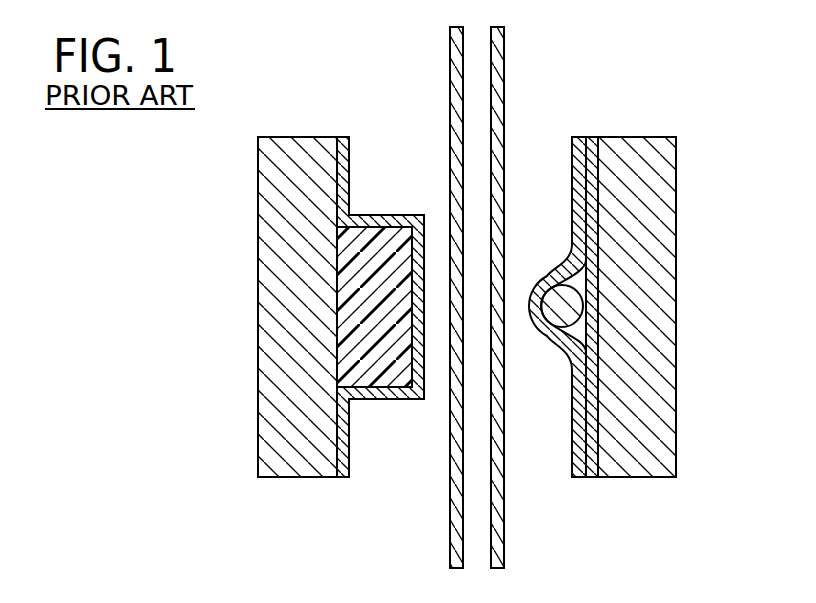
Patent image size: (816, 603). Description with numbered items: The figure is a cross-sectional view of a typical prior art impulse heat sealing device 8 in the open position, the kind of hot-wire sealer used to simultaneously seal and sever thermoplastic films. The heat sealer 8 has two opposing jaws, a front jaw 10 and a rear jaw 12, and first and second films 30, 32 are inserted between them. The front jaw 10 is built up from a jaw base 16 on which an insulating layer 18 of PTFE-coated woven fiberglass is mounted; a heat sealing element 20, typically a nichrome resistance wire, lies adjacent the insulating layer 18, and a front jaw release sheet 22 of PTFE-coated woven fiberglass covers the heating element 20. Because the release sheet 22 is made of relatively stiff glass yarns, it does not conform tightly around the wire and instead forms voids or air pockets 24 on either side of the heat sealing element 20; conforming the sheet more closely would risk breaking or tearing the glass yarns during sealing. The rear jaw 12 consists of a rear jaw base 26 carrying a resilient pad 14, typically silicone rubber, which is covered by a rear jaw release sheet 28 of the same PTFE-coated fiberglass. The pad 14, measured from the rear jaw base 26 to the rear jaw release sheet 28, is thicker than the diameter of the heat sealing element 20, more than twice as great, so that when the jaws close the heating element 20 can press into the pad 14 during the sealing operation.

The impulse heat sealing device 8 is at (631, 282).
The front jaw 10 is at (631, 290).
The rear jaw 12 is at (304, 288).
The resilient pad 14 is at (373, 258).
The jaw base 16 is at (650, 308).
The insulating layer 18 is at (598, 440).
The heat sealing element 20 is at (556, 298).
The front jaw release sheet 22 is at (572, 172).
The voids 24 is at (578, 280).
The rear jaw base 26 is at (268, 216).
The rear jaw release sheet 28 is at (349, 455).
The first film 30 is at (505, 62).
The second film 32 is at (449, 61).